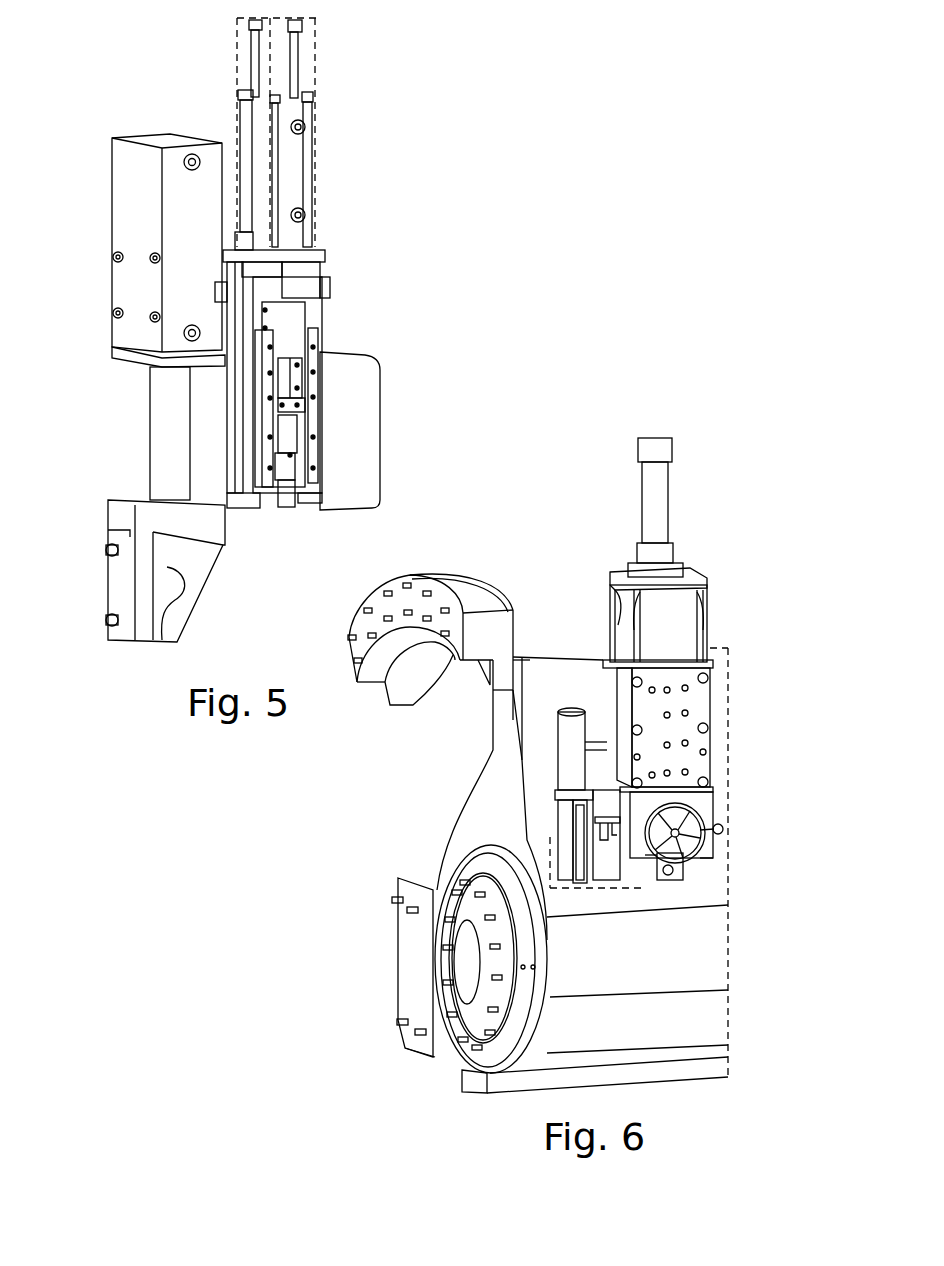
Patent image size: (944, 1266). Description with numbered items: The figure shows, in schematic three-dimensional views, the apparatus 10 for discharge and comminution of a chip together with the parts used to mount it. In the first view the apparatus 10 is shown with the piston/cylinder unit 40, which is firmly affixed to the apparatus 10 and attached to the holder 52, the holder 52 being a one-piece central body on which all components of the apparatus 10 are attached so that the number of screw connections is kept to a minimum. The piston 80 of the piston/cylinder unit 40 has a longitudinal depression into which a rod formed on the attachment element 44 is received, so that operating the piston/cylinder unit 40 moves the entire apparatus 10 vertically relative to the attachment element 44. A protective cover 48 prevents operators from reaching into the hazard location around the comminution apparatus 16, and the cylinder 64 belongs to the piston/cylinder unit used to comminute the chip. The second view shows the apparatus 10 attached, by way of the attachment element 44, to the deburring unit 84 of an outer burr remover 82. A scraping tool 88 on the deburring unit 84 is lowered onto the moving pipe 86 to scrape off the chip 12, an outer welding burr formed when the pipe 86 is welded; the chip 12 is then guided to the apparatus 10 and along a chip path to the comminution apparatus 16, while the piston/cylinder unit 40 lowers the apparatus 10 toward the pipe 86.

In FIG. 5, the apparatus for discharge and comminution of a chip 10 is at (347, 323).
In FIG. 6, the apparatus for discharge and comminution of a chip 10 is at (553, 707).
In FIG. 6, the chip 12 is at (712, 907).
In FIG. 5, the comminution apparatus 16 is at (287, 518).
In FIG. 5, the piston/cylinder unit 40 is at (97, 305).
In FIG. 5, the attachment element 44 is at (170, 627).
In FIG. 5, the protective cover 48 is at (357, 442).
In FIG. 5, the holder 52 is at (323, 248).
In FIG. 5, the cylinder 64 is at (308, 43).
In FIG. 5, the piston 80 is at (163, 425).
In FIG. 6, the outer burr remover 82 is at (340, 869).
In FIG. 6, the deburring unit 84 is at (723, 723).
In FIG. 6, the pipe 86 is at (718, 937).
In FIG. 6, the scraping tool 88 is at (643, 860).